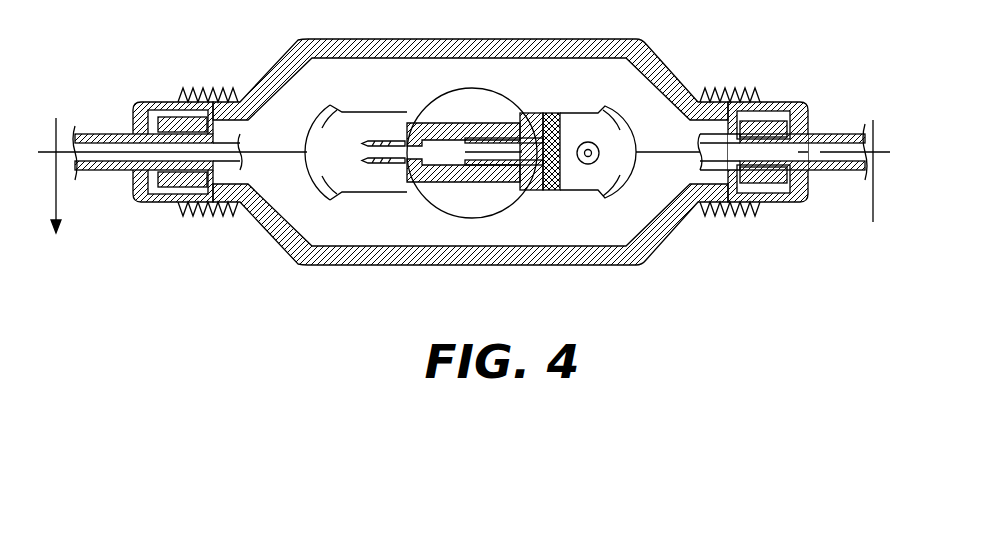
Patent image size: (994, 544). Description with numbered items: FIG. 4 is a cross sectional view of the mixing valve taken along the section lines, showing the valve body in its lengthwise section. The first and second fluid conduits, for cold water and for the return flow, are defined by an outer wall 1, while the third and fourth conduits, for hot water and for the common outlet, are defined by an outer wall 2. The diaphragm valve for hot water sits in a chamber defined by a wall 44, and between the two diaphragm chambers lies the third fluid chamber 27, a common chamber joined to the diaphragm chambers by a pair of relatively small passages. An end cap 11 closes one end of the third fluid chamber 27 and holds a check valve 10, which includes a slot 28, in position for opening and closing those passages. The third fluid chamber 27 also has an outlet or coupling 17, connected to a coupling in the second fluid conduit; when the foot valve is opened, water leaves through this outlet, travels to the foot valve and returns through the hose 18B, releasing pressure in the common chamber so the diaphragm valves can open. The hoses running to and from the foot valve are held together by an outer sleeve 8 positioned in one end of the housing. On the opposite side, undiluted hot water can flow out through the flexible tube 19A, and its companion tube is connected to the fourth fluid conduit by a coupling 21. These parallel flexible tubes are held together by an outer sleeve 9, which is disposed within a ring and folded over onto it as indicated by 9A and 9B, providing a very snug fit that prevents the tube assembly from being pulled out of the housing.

The outer wall 1 is at (466, 191).
The outer wall 2 is at (350, 127).
The outer sleeve 8 is at (100, 133).
The outer sleeve 9 is at (822, 160).
The folded-over portion of outer sleeve 9A is at (765, 103).
The folded-over portion of outer sleeve 9B is at (775, 203).
The check valve 10 is at (543, 126).
The end cap 11 is at (550, 180).
The outlet or coupling 17 is at (382, 141).
The hose 18B is at (118, 150).
The flexible tube 19A is at (768, 153).
The coupling 21 is at (598, 148).
The third fluid chamber 27 is at (416, 181).
The slot 28 is at (486, 138).
The wall 44 is at (440, 122).